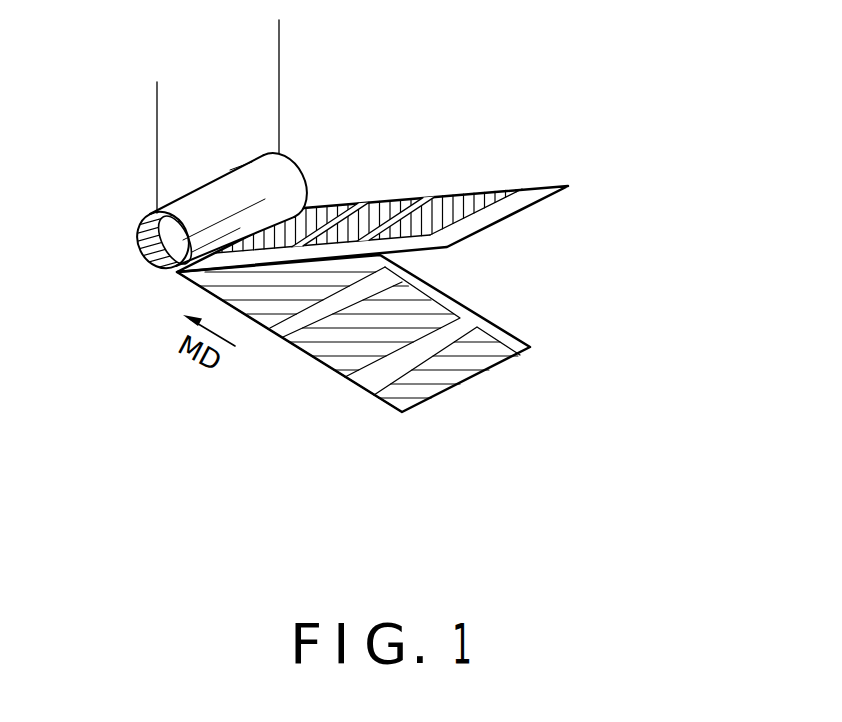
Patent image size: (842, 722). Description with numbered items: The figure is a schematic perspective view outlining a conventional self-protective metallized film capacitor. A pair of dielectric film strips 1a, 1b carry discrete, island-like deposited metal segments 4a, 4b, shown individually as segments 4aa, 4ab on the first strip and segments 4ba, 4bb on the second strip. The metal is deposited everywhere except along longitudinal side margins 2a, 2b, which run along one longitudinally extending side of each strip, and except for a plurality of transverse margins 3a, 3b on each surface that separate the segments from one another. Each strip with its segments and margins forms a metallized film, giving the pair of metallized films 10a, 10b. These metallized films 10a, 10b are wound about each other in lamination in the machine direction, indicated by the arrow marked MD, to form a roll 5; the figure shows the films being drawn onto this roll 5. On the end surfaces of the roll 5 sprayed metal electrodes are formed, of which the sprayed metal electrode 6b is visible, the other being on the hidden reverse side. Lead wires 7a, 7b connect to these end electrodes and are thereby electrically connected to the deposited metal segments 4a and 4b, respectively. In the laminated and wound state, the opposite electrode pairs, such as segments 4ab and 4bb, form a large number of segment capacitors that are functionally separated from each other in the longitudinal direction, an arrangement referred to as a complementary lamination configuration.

The metallized film 10a is at (456, 167).
The metallized film 10b is at (373, 388).
The dielectric film strip 1a is at (526, 205).
The dielectric film strip 1b is at (481, 362).
The longitudinal side margin 2a is at (440, 249).
The longitudinal side margin 2b is at (535, 346).
The transverse margin 3a is at (510, 191).
The transverse margin 3b is at (353, 373).
The deposited metal segments 4a is at (435, 155).
The deposited metal segment 4aa is at (472, 198).
The deposited metal segment 4ab is at (387, 207).
The deposited metal segments 4b is at (326, 385).
The deposited metal segment 4ba is at (333, 355).
The deposited metal segment 4bb is at (263, 316).
The roll 5 is at (292, 160).
The sprayed metal electrode 6b is at (175, 271).
The lead wire 7a is at (282, 40).
The lead wire 7b is at (157, 115).